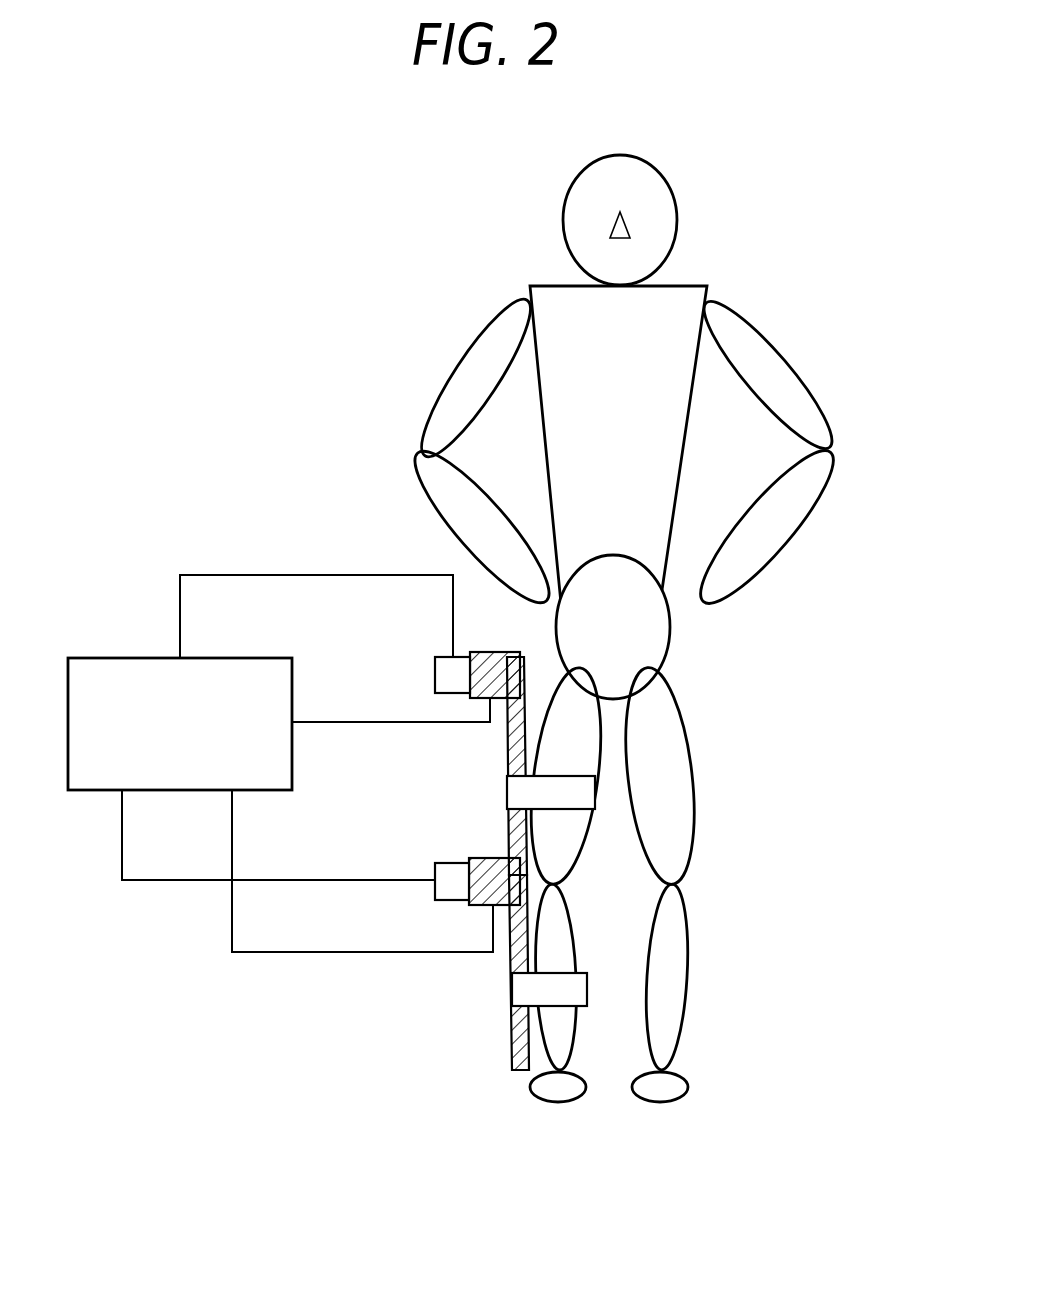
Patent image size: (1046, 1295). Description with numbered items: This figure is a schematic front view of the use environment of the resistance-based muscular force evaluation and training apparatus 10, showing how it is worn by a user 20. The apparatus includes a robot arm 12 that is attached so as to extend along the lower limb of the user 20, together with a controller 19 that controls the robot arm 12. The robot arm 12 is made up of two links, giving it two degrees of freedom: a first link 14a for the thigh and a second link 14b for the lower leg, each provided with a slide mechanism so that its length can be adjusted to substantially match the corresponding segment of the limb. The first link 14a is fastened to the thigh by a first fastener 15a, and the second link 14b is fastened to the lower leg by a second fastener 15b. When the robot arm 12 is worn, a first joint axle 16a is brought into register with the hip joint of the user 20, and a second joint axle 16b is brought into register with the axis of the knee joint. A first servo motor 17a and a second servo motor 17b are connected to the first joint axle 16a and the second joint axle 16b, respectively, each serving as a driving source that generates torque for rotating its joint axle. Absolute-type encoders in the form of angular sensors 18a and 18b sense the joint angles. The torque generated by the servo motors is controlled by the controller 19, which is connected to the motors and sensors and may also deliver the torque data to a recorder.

The resistance-based muscular force evaluation and training apparatus 10 is at (438, 867).
The robot arm 12 is at (416, 863).
The first link 14a is at (508, 755).
The second link 14b is at (511, 1000).
The first fastener 15a is at (580, 793).
The second fastener 15b is at (587, 987).
The first joint axle 16a is at (523, 673).
The second joint axle 16b is at (525, 875).
The first servo motor 17a is at (490, 652).
The second servo motor 17b is at (478, 906).
The angular sensor 18a is at (435, 676).
The angular sensor 18b is at (449, 863).
The controller 19 is at (120, 658).
The user 20 is at (678, 320).